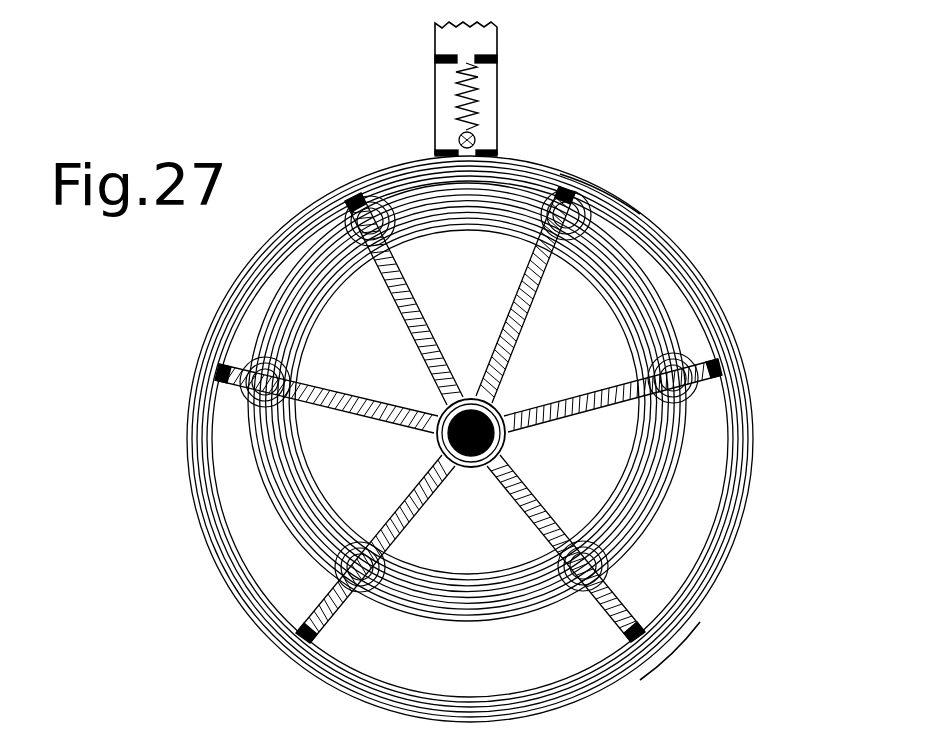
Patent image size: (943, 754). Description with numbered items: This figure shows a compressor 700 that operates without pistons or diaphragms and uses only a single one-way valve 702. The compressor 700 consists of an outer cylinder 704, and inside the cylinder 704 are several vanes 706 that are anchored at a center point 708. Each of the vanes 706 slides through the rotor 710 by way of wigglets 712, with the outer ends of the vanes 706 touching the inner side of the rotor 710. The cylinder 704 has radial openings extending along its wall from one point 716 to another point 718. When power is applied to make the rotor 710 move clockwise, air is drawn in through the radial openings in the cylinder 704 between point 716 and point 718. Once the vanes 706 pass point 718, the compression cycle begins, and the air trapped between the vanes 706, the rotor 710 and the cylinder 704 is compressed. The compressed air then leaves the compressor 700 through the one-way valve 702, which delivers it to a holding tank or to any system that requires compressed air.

The compressor 700 is at (718, 170).
The one-way valve 702 is at (512, 97).
The cylinder 704 is at (342, 168).
The vanes 706 is at (423, 308).
The center point 708 is at (506, 394).
The rotor 710 is at (318, 300).
The wigglets 712 is at (300, 376).
The point 716 is at (599, 174).
The point 718 is at (670, 648).